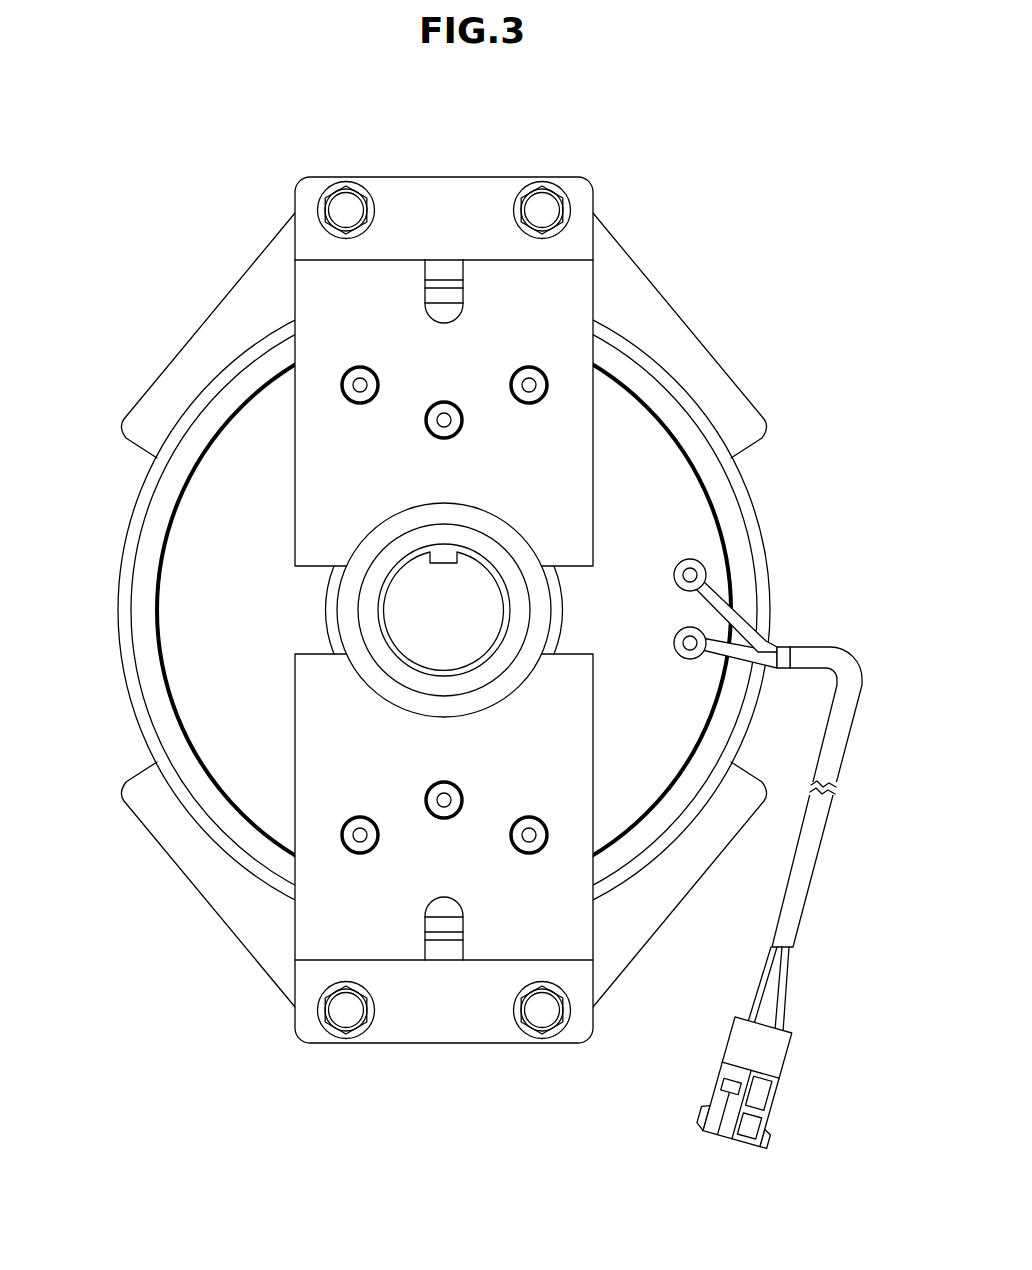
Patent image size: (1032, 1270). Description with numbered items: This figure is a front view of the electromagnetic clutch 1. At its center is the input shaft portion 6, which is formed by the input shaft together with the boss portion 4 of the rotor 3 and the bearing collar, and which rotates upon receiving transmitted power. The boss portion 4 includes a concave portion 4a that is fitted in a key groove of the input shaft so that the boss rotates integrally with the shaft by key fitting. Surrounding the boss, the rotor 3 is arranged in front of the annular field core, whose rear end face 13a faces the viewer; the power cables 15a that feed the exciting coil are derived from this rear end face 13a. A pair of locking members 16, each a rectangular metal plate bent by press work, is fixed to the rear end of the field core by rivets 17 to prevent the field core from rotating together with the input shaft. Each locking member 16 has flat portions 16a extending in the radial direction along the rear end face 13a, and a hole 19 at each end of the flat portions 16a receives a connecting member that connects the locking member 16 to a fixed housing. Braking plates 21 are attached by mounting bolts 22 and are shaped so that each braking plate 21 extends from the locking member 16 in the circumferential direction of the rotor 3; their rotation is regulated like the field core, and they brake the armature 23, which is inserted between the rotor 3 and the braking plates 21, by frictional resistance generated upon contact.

The electromagnetic clutch 1 is at (140, 134).
The rotor 3 is at (752, 554).
The boss portion 4 is at (337, 578).
The concave portion 4a is at (445, 560).
The input shaft portion 6 is at (344, 611).
The rear end face 13a is at (670, 697).
The power cables 15a is at (774, 647).
The locking members 16 is at (297, 510).
The flat portions 16a is at (317, 485).
The rivets 17 is at (517, 373).
The hole 19 is at (432, 298).
The braking plates 21 is at (648, 277).
The mounting bolts 22 is at (343, 205).
The armature 23 is at (750, 498).